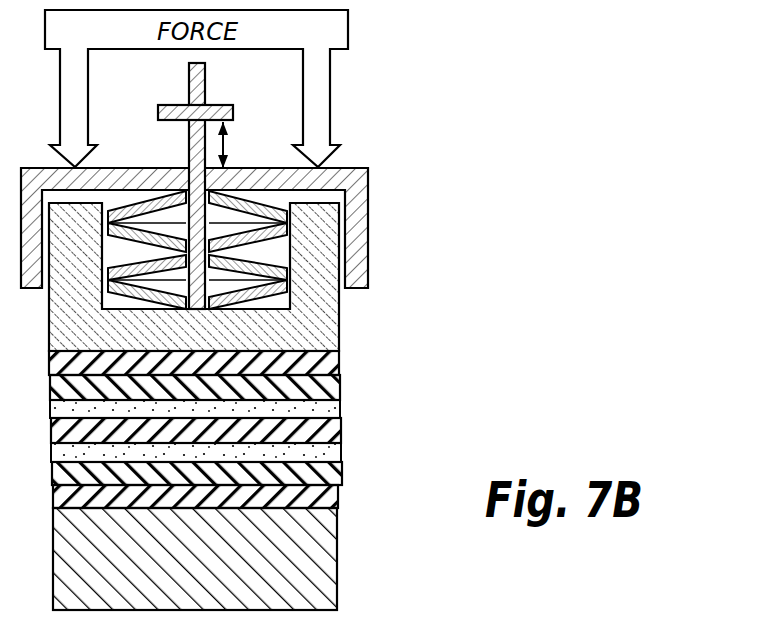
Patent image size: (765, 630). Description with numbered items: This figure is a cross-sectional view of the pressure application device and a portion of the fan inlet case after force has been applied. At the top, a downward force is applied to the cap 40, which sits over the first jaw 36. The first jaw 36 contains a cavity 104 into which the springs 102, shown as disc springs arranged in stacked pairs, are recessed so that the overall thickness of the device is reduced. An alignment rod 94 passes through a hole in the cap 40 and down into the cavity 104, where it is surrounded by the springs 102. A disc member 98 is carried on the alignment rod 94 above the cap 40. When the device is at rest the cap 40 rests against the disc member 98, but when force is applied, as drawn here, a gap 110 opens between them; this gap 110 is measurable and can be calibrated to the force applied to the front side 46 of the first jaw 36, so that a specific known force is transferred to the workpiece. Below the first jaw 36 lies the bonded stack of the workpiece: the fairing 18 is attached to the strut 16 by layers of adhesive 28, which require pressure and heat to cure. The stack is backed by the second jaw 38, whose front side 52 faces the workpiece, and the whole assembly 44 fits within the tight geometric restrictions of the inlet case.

The cap 40 is at (357, 192).
The first jaw 36 is at (313, 323).
The spring 102 is at (286, 230).
The cavity 104 is at (272, 252).
The alignment rod 94 is at (190, 73).
The disc member 98 is at (217, 112).
The gap 110 is at (228, 140).
The front side 46 is at (333, 367).
The adhesive 28 is at (333, 410).
The strut 16 is at (338, 430).
The fairing 18 is at (327, 473).
The front side 52 is at (333, 508).
The second jaw 38 is at (283, 548).
The sensor assembly 44 is at (390, 593).